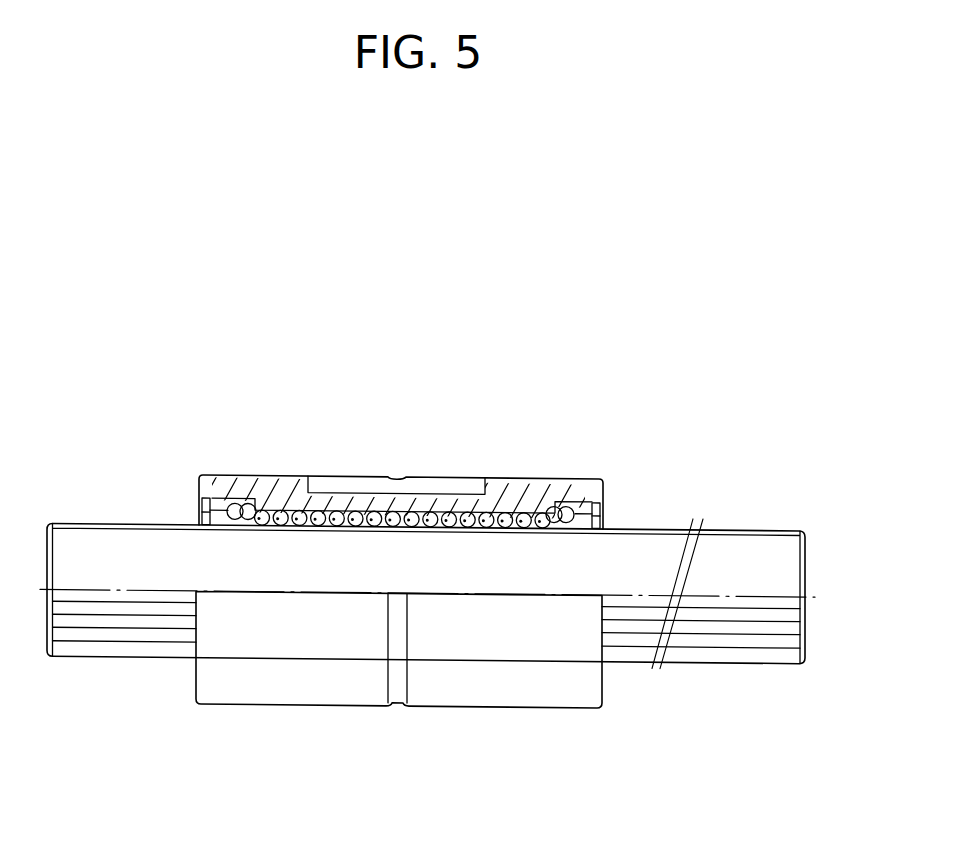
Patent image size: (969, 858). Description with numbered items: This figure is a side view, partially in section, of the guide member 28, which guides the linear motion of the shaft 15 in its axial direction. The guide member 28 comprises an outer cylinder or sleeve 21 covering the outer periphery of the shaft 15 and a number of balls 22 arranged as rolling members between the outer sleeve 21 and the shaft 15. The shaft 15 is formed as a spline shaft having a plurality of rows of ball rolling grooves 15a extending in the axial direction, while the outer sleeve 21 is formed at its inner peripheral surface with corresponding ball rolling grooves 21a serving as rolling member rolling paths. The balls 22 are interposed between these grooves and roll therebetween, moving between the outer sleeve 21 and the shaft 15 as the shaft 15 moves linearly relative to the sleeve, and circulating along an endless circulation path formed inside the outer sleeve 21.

The shaft 15 is at (783, 558).
The ball rolling grooves 15a is at (777, 613).
The outer sleeve 21 is at (510, 493).
The ball rolling grooves 21a is at (343, 508).
The balls 22 is at (552, 480).
The guide member 28 is at (438, 463).